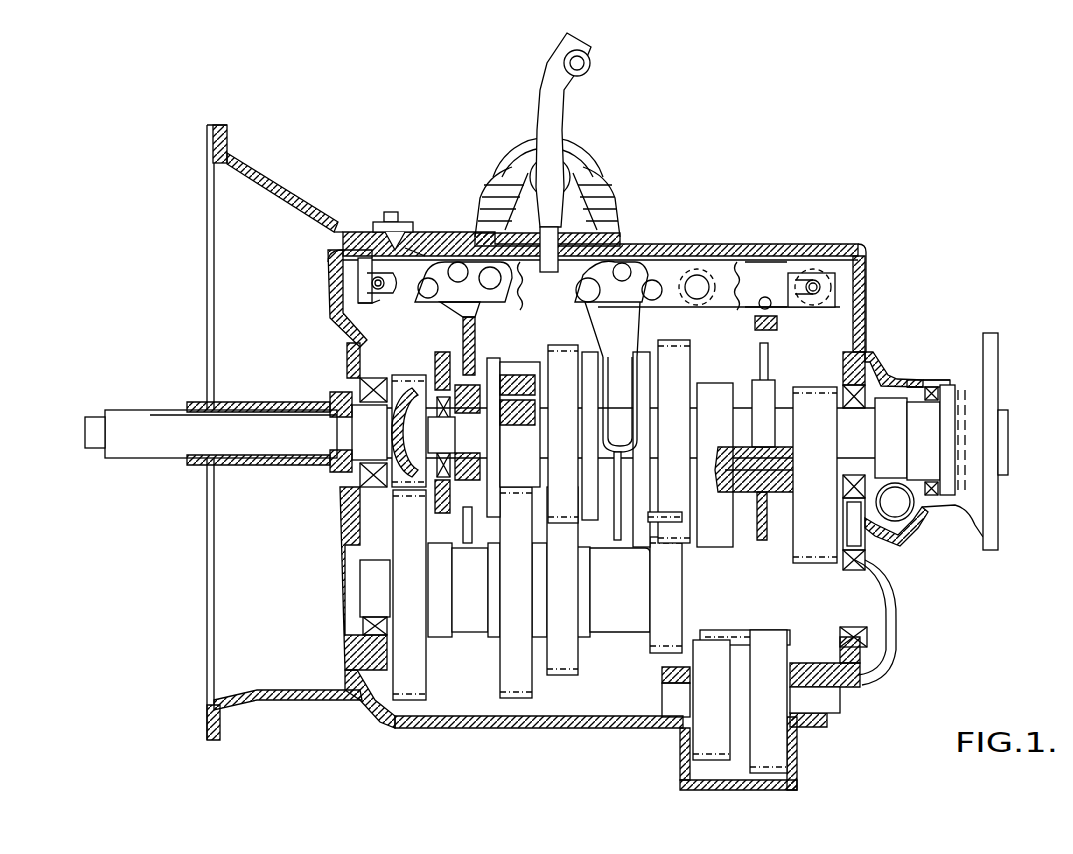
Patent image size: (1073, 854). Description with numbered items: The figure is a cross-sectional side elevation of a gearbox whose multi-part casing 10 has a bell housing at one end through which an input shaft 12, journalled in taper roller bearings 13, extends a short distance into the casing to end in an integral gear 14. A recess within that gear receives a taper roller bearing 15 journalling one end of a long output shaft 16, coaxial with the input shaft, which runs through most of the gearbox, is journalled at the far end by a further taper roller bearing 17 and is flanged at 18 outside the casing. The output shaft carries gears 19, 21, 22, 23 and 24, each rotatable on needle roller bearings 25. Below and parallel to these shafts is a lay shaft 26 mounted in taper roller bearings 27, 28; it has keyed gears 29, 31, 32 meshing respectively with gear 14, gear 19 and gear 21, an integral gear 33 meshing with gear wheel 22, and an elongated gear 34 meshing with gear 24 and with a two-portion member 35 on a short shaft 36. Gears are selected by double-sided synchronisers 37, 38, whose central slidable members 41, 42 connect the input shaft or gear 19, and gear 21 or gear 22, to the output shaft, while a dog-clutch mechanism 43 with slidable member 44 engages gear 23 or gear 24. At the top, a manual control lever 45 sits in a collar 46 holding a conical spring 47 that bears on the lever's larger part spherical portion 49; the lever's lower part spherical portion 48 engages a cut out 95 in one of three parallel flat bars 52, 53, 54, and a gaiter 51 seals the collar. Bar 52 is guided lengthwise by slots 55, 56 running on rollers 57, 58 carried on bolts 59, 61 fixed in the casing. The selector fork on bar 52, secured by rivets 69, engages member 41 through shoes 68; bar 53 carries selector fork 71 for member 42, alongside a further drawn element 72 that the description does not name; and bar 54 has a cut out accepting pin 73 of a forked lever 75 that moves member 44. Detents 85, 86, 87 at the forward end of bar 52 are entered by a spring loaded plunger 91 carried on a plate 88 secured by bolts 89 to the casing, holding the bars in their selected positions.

The casing 10 is at (620, 723).
The input shaft 12 is at (150, 427).
The taper roller bearings 13 is at (343, 483).
The integral gear 14 is at (397, 375).
The taper roller bearing 15 is at (447, 463).
The output shaft 16 is at (890, 423).
The taper roller bearing 17 is at (860, 383).
The flange 18 is at (993, 543).
The gear 19 is at (527, 380).
The gear 21 is at (565, 348).
The gear wheel 22 is at (673, 353).
The gear 23 is at (708, 437).
The gear 24 is at (840, 533).
The needle roller bearings 25 is at (520, 402).
The lay shaft 26 is at (373, 583).
The taper roller bearing 27 is at (363, 627).
The taper roller bearing 28 is at (867, 637).
The gear 29 is at (410, 697).
The gear 31 is at (517, 693).
The gear 32 is at (567, 672).
The integral gear 33 is at (667, 652).
The elongated gear 34 is at (805, 632).
The member 35 is at (768, 750).
The short shaft 36 is at (820, 703).
The synchroniser 37 is at (440, 512).
The synchroniser 38 is at (648, 515).
The slidable member 41 is at (467, 543).
The slidable member 42 is at (618, 540).
The dog-clutch mechanism 43 is at (785, 470).
The slidable member 44 is at (763, 540).
The manual control lever 45 is at (558, 58).
The collar 46 is at (492, 197).
The conical spring 47 is at (597, 202).
The part spherical integral portion 48 is at (596, 285).
The part spherical portion 49 is at (540, 172).
The gaiter 51 is at (573, 143).
The bar 52 is at (507, 300).
The bar 53 is at (720, 270).
The bar 54 is at (777, 267).
The slot 55 is at (360, 278).
The slot 56 is at (837, 280).
The roller 57 is at (362, 282).
The roller 58 is at (820, 290).
The bolt 59 is at (367, 300).
The bolt 61 is at (815, 287).
The shoes 68 is at (450, 305).
The rivets 69 is at (425, 290).
The selector fork 71 is at (613, 270).
The shift rail 72 is at (653, 290).
The pin 73 is at (765, 300).
The forked lever 75 is at (780, 333).
The detent 85 is at (387, 257).
The detent 86 is at (397, 247).
The detent 87 is at (413, 250).
The plate 88 is at (377, 217).
The bolts 89 is at (390, 210).
The spring loaded plunger 91 is at (380, 233).
The cut out 95 is at (552, 272).